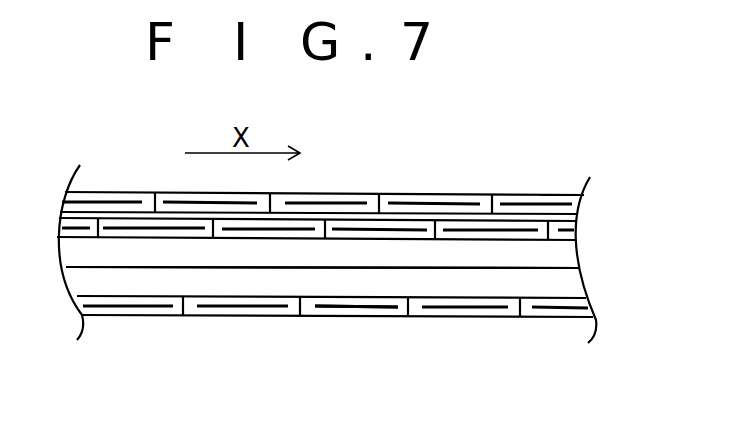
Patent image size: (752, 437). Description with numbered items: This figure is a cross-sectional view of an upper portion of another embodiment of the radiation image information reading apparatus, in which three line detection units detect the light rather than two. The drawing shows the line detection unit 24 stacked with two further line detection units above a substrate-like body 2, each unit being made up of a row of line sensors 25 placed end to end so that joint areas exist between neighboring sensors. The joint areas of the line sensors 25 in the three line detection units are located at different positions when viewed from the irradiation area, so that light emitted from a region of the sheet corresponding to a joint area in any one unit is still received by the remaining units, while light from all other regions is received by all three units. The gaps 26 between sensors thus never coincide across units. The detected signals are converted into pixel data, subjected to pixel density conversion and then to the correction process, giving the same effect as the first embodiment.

The substrate 2 is at (557, 269).
The line detection unit 24 is at (567, 200).
The line sensor 25 is at (458, 200).
The gap 26 is at (527, 200).